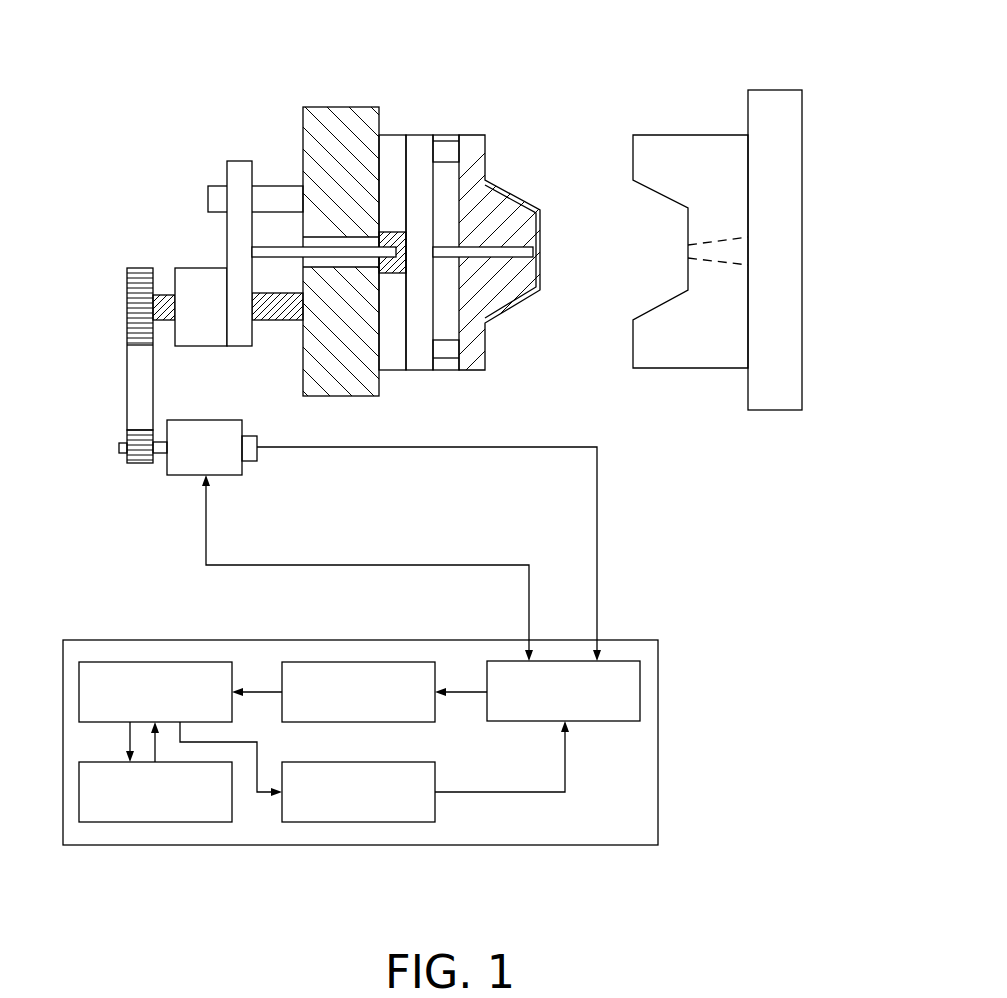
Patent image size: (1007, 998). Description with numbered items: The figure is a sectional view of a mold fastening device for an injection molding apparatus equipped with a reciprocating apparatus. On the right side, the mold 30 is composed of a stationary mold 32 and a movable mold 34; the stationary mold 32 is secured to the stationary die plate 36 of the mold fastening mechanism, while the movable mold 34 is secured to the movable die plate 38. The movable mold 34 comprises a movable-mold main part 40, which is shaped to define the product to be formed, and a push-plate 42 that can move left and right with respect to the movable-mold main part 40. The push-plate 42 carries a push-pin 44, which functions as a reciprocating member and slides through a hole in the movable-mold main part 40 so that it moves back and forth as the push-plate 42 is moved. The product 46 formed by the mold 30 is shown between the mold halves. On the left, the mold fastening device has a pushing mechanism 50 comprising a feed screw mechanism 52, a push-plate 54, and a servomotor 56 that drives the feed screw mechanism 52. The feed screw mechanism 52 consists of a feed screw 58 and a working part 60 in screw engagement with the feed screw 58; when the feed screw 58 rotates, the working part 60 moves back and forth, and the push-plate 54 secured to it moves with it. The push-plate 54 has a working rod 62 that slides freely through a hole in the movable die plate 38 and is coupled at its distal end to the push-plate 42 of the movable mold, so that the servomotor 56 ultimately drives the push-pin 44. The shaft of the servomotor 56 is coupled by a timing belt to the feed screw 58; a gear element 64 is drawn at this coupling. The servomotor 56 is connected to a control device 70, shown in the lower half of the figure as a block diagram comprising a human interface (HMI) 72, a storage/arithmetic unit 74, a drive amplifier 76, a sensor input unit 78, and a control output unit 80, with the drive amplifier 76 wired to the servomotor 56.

The mold 30 is at (668, 78).
The stationary mold 32 is at (663, 143).
The movable mold 34 is at (462, 100).
The stationary die plate 36 is at (783, 113).
The movable die plate 38 is at (340, 118).
The movable-mold main part 40 is at (480, 150).
The push-plate 42 is at (420, 145).
The push-pin 44 is at (452, 258).
The product 46 is at (542, 233).
The pushing mechanism 50 is at (187, 118).
The feed screw mechanism 52 is at (217, 367).
The push-plate 54 is at (240, 165).
The servomotor 56 is at (187, 462).
The feed screw 58 is at (163, 297).
The working part 60 is at (198, 277).
The working rod 62 is at (277, 247).
The gear 64 is at (137, 392).
The control device 70 is at (658, 670).
The human interface (HMI) 72 is at (150, 823).
The storage/arithmetic unit 74 is at (155, 662).
The drive amplifier 76 is at (500, 660).
The sensor input unit 78 is at (367, 660).
The control output unit 80 is at (363, 823).